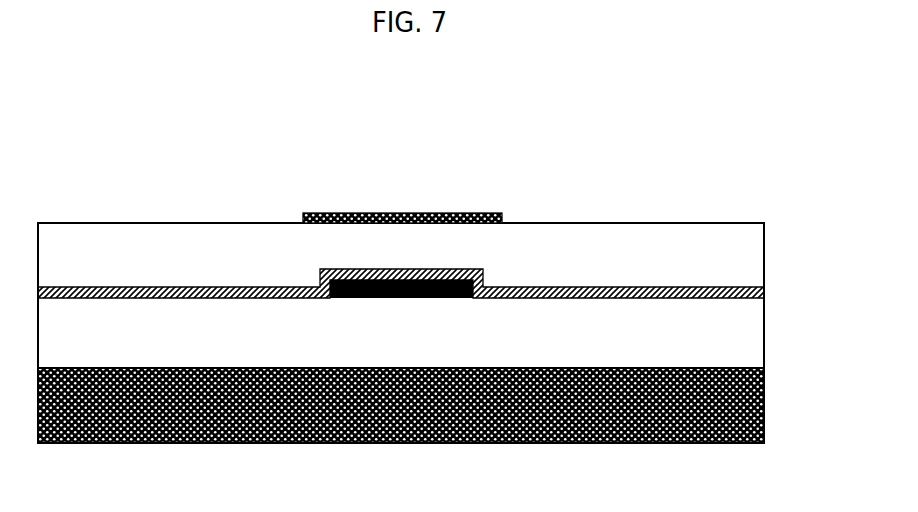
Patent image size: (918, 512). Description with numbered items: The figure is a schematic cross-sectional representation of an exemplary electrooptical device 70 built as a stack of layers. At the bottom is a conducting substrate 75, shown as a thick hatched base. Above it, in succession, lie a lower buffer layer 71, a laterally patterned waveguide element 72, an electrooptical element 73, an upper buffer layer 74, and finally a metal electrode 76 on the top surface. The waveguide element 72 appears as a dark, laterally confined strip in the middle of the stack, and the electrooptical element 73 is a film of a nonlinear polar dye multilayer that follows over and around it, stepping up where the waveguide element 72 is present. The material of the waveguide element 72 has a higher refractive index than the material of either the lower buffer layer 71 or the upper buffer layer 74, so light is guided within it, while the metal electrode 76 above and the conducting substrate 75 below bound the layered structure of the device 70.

The electrooptical device 70 is at (267, 138).
The lower buffer layer 71 is at (722, 331).
The laterally patterned waveguide element 72 is at (375, 295).
The electrooptical element 73 is at (540, 278).
The upper buffer layer 74 is at (735, 253).
The conducting substrate 75 is at (768, 405).
The metal electrode 76 is at (383, 213).